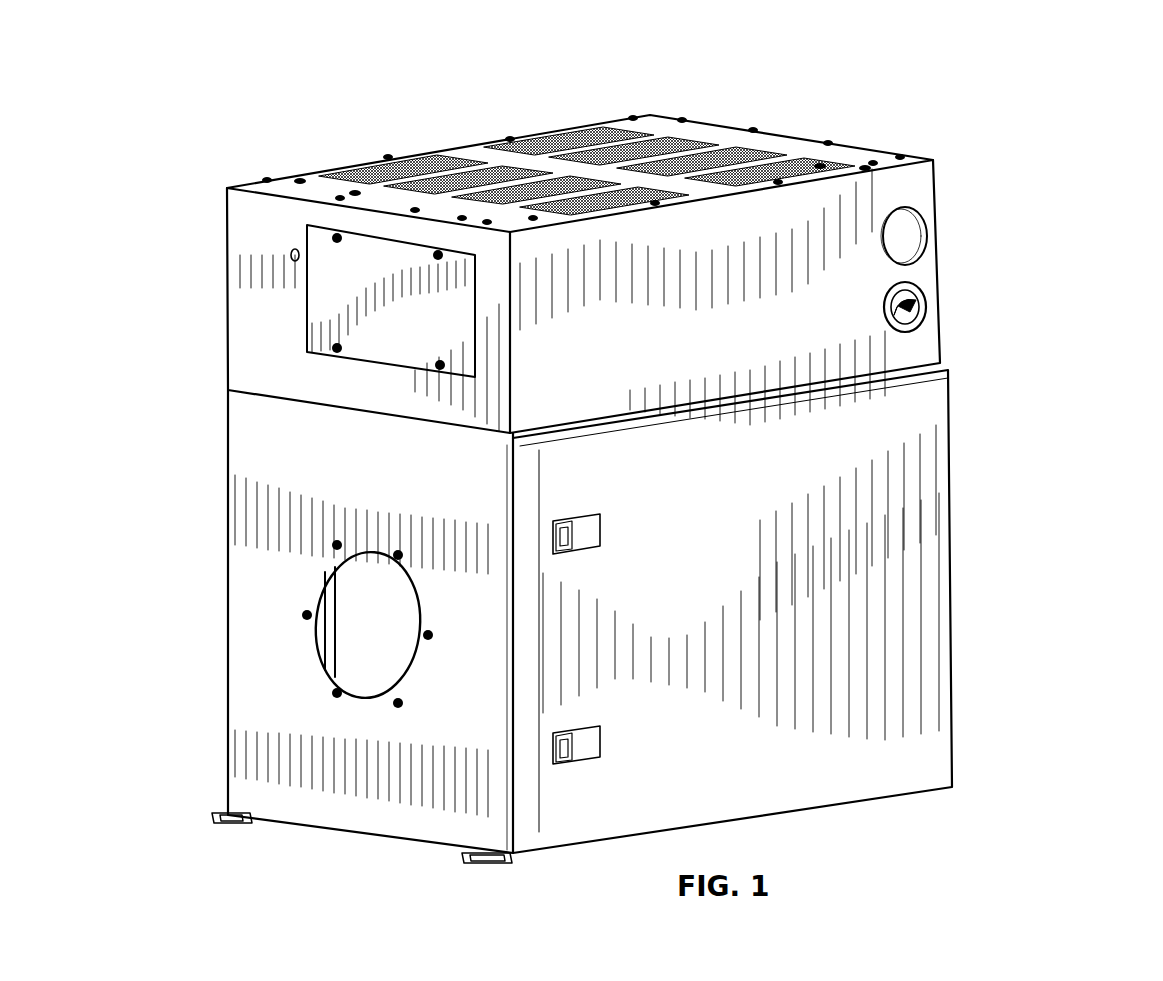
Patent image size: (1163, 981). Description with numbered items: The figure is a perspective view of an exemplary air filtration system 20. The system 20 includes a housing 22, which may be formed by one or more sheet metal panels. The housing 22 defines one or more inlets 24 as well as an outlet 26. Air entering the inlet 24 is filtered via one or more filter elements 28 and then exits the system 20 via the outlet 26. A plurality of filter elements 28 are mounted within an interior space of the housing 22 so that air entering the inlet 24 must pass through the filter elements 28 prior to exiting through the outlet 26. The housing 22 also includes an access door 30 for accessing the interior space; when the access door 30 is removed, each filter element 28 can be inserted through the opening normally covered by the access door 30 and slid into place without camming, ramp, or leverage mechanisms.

The system 20 is at (1017, 95).
The housing 22 is at (263, 440).
The inlet 24 is at (320, 587).
The outlet 26 is at (803, 148).
The filter element 28 is at (350, 638).
The access door 30 is at (937, 587).